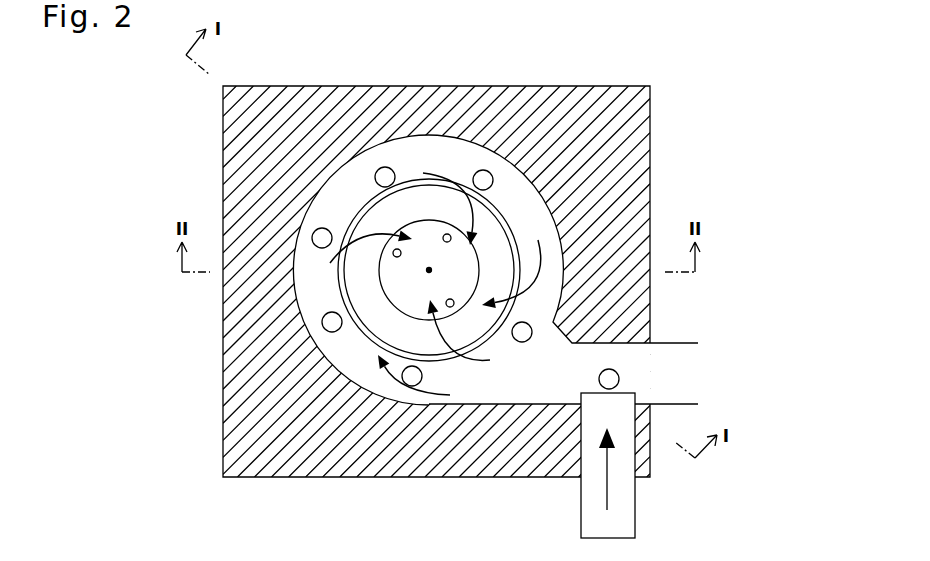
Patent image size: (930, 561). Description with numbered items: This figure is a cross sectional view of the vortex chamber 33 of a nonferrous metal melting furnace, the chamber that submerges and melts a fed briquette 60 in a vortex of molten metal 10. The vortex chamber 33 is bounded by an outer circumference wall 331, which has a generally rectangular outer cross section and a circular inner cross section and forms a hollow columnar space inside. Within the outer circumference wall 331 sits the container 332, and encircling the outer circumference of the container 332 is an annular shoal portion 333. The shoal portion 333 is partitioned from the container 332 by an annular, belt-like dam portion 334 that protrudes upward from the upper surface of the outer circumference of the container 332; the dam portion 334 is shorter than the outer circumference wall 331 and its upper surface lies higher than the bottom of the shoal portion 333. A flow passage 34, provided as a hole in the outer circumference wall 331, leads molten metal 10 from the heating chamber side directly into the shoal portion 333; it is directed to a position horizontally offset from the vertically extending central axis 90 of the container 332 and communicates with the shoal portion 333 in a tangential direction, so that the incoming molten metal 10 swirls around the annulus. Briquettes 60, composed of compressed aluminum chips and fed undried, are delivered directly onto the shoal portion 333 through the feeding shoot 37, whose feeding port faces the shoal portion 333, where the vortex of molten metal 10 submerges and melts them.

The vortex chamber 33 is at (499, 264).
The outer circumference wall 331 is at (615, 155).
The container 332 is at (408, 280).
The shoal portion 333 is at (345, 362).
The dam portion 334 is at (362, 271).
The flow passage 34 is at (555, 383).
The feeding shoot 37 is at (637, 498).
The briquette 60 is at (385, 177).
The central axis 90 is at (428, 268).
The molten metal 10 is at (517, 390).